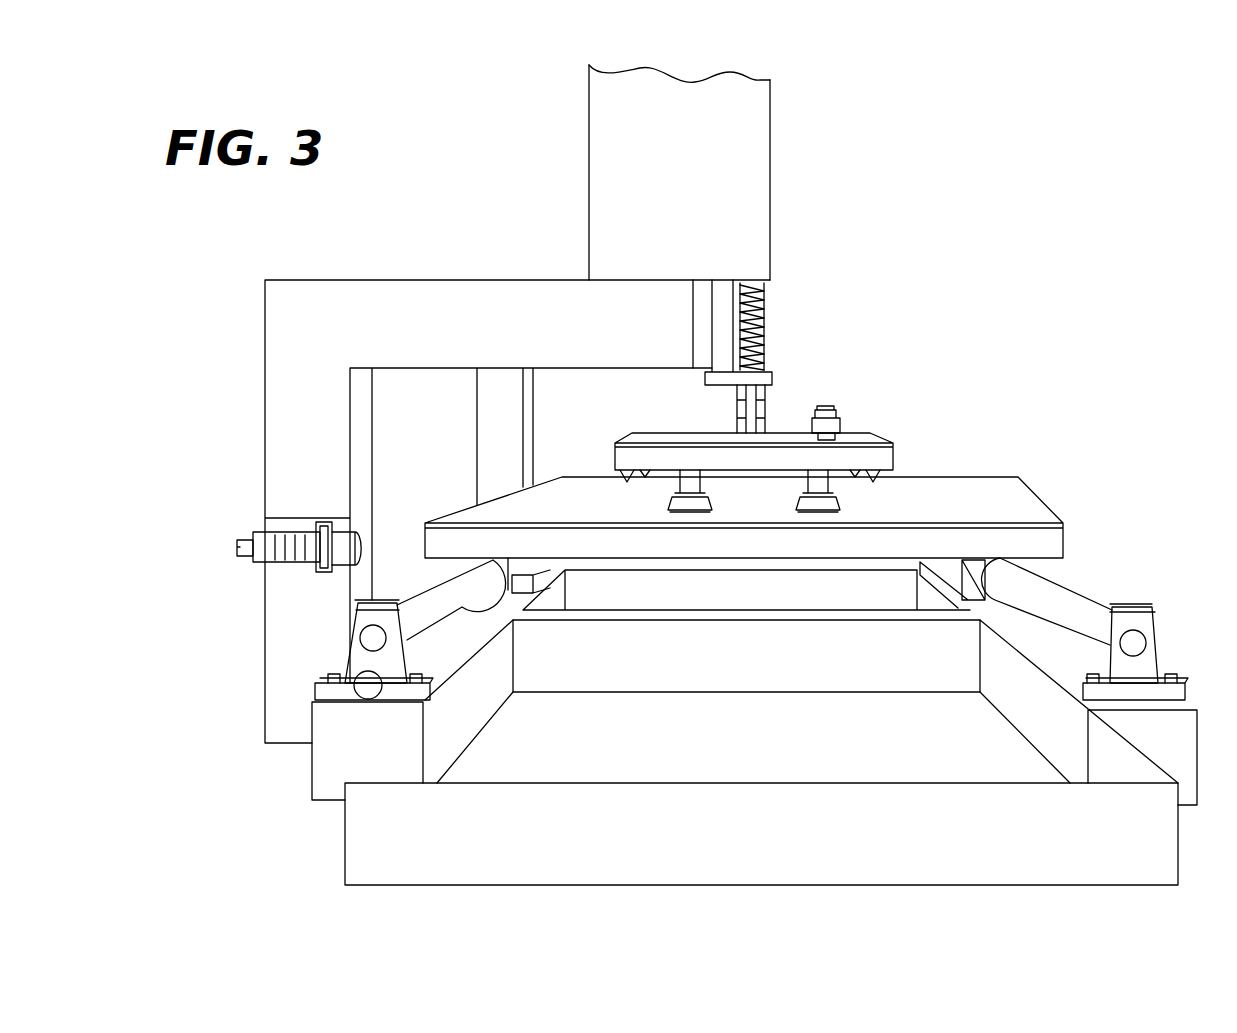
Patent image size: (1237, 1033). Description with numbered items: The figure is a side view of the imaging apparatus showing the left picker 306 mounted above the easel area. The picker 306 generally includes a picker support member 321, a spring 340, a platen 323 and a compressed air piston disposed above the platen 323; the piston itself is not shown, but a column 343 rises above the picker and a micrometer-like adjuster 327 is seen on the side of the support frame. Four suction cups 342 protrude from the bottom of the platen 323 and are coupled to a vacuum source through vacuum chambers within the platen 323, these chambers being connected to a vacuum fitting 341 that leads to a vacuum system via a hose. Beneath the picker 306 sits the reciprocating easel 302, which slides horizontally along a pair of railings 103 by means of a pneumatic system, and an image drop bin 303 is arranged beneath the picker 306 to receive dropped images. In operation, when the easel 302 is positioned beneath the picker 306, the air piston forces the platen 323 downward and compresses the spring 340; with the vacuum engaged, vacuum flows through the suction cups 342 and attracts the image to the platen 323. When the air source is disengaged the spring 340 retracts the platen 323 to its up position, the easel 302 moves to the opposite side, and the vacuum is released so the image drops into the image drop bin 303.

The left picker 306 is at (900, 238).
The vertical column 343 is at (770, 208).
The picker support member 321 is at (452, 279).
The spring 340 is at (762, 320).
The platen 323 is at (893, 457).
The vacuum fitting 341 is at (840, 418).
The suction cups 342 is at (840, 500).
The easel 302 is at (1065, 538).
The railings 103 is at (372, 637).
The micrometer adjuster 327 is at (252, 560).
The image drop bin 303 is at (890, 744).